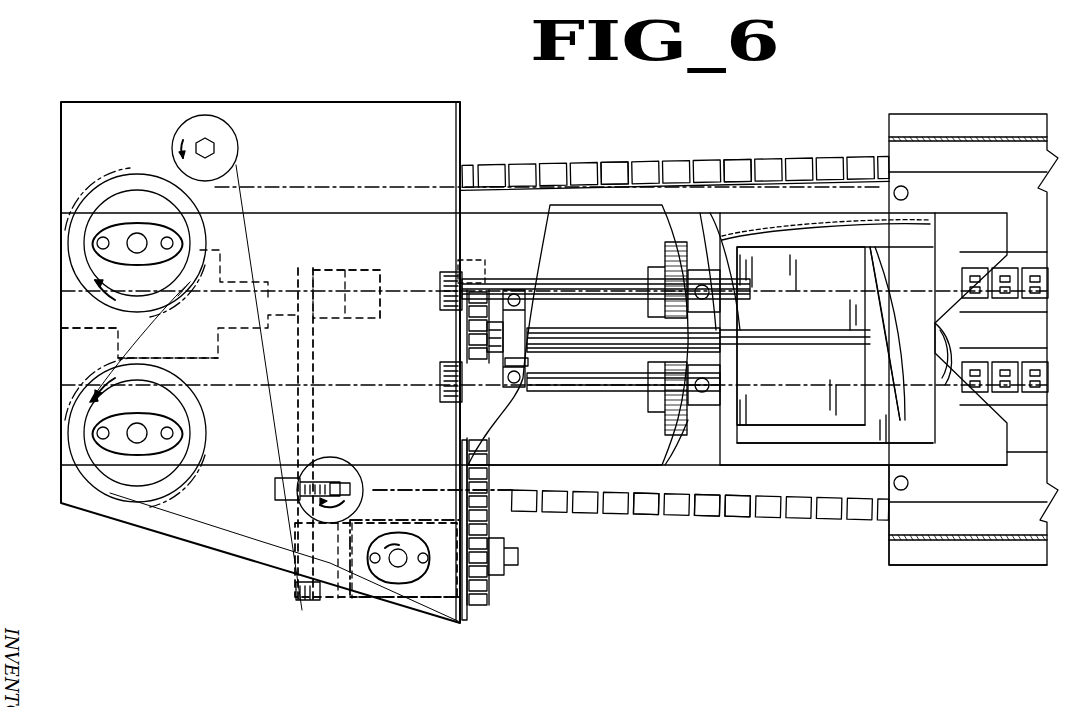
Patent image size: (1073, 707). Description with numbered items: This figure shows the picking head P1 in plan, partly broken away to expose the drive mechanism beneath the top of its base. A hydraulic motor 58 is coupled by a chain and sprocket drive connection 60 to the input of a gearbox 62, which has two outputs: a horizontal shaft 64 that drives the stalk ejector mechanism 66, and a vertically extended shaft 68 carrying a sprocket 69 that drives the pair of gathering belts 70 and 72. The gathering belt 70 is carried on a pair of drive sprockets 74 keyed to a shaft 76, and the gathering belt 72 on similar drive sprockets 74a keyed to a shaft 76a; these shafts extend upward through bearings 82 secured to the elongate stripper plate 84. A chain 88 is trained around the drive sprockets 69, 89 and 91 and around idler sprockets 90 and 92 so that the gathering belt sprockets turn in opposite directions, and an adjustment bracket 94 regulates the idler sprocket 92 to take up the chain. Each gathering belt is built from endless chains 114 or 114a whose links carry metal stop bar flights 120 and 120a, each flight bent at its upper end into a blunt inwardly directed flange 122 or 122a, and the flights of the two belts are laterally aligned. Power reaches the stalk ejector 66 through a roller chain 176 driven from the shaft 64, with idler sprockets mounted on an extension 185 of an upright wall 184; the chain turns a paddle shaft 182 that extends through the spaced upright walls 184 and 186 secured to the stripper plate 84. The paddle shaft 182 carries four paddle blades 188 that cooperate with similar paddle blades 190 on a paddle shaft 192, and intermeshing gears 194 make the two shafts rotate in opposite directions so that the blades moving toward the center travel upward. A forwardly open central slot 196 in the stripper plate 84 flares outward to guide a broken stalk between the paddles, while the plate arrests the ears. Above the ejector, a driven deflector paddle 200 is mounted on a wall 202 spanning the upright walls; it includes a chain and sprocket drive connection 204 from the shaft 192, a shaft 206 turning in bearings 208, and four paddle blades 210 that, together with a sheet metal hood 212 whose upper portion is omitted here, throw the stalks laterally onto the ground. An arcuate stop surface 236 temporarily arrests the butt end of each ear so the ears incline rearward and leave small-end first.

The hydraulic motor 58 is at (62, 326).
The chain and sprocket drive connection 60 is at (318, 405).
The gearbox 62 is at (358, 598).
The horizontal shaft 64 is at (518, 556).
The stalk ejector mechanism 66 is at (920, 452).
The vertically extended shaft 68 is at (398, 568).
The sprocket 69 is at (375, 538).
The gathering belt 70 is at (828, 513).
The gathering belt 72 is at (818, 158).
The drive sprockets 74 is at (185, 402).
The drive sprockets 74a is at (108, 200).
The shaft 76 is at (118, 433).
The shaft 76a is at (118, 240).
The bearings 82 is at (110, 230).
The stripper plate 84 is at (68, 306).
The chain 88 is at (240, 170).
The drive sprocket 89 is at (182, 378).
The idler sprocket 90 is at (240, 160).
The drive sprocket 91 is at (197, 301).
The idler sprocket 92 is at (340, 452).
The adjustment bracket 94 is at (285, 497).
The endless chains 114 is at (440, 488).
The endless chains 114a is at (348, 187).
The stop bar 120 is at (645, 516).
The stop bar flights 120a is at (592, 160).
The inwardly directed flange 122 is at (738, 518).
The inwardly directed flange 122a is at (716, 160).
The roller chain 176 is at (500, 528).
The paddle shaft 182 is at (562, 393).
The upright wall 184 is at (462, 224).
The extension 185 is at (478, 603).
The upright wall 186 is at (694, 440).
The paddle blades 188 is at (928, 438).
The paddle blades 190 is at (922, 290).
The paddle shaft 192 is at (550, 280).
The intermeshing gears 194 is at (665, 255).
The central slot 196 is at (770, 352).
The deflector paddle 200 is at (880, 260).
The wall 202 is at (700, 222).
The chain and sprocket drive connection 204 is at (462, 334).
The shaft 206 is at (552, 340).
The bearings 208 is at (530, 362).
The paddle blades 210 is at (823, 275).
The sheet metal hood 212 is at (792, 222).
The arcuate stop surface 236 is at (945, 390).
The picking head P1 is at (700, 520).